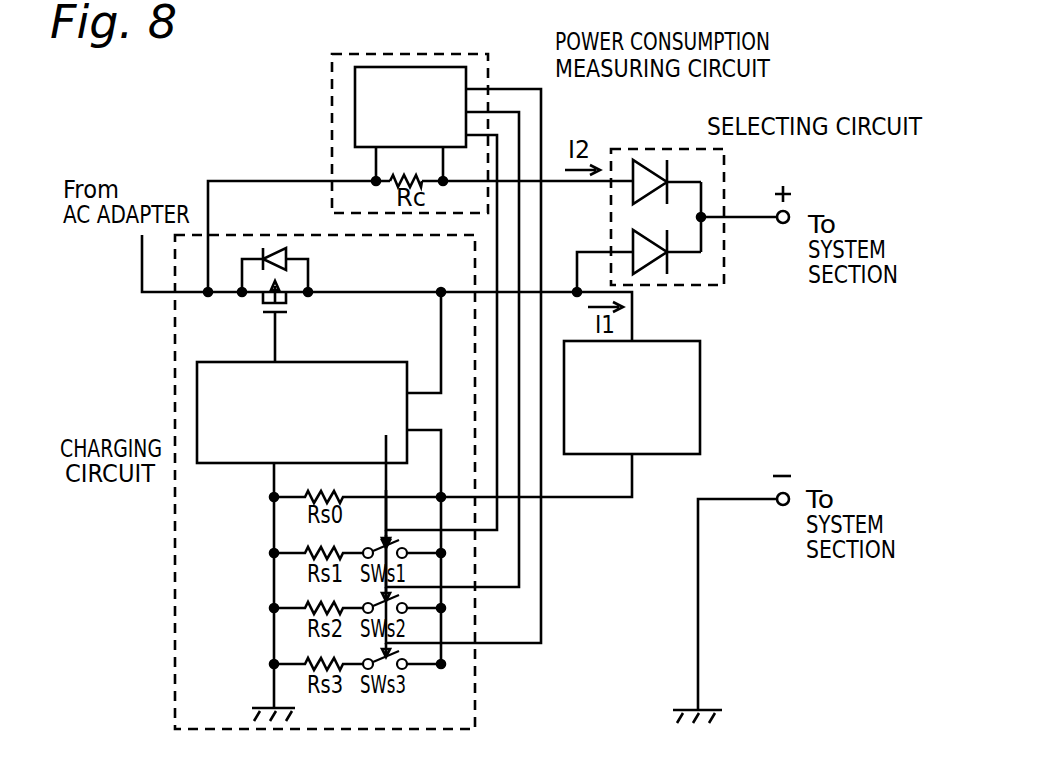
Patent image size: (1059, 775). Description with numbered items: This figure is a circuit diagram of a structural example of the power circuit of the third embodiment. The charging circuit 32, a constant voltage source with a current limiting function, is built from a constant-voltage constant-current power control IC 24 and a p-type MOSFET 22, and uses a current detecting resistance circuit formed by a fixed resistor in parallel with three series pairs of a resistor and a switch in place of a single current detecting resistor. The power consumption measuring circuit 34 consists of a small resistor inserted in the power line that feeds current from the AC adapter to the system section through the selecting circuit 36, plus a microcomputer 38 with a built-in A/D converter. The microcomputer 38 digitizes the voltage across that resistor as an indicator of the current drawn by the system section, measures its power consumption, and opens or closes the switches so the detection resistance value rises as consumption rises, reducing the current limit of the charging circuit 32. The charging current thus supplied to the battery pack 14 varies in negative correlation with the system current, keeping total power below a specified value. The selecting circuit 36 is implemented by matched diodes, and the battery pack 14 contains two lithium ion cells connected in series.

The battery pack 14 is at (700, 374).
The p-type MOSFET 22 is at (263, 312).
The constant-voltage constant-current power control IC 24 is at (225, 463).
The charging circuit 32 is at (175, 390).
The power consumption measuring circuit 34 is at (472, 57).
The selecting circuit 36 is at (640, 149).
The microcomputer 38 is at (355, 97).